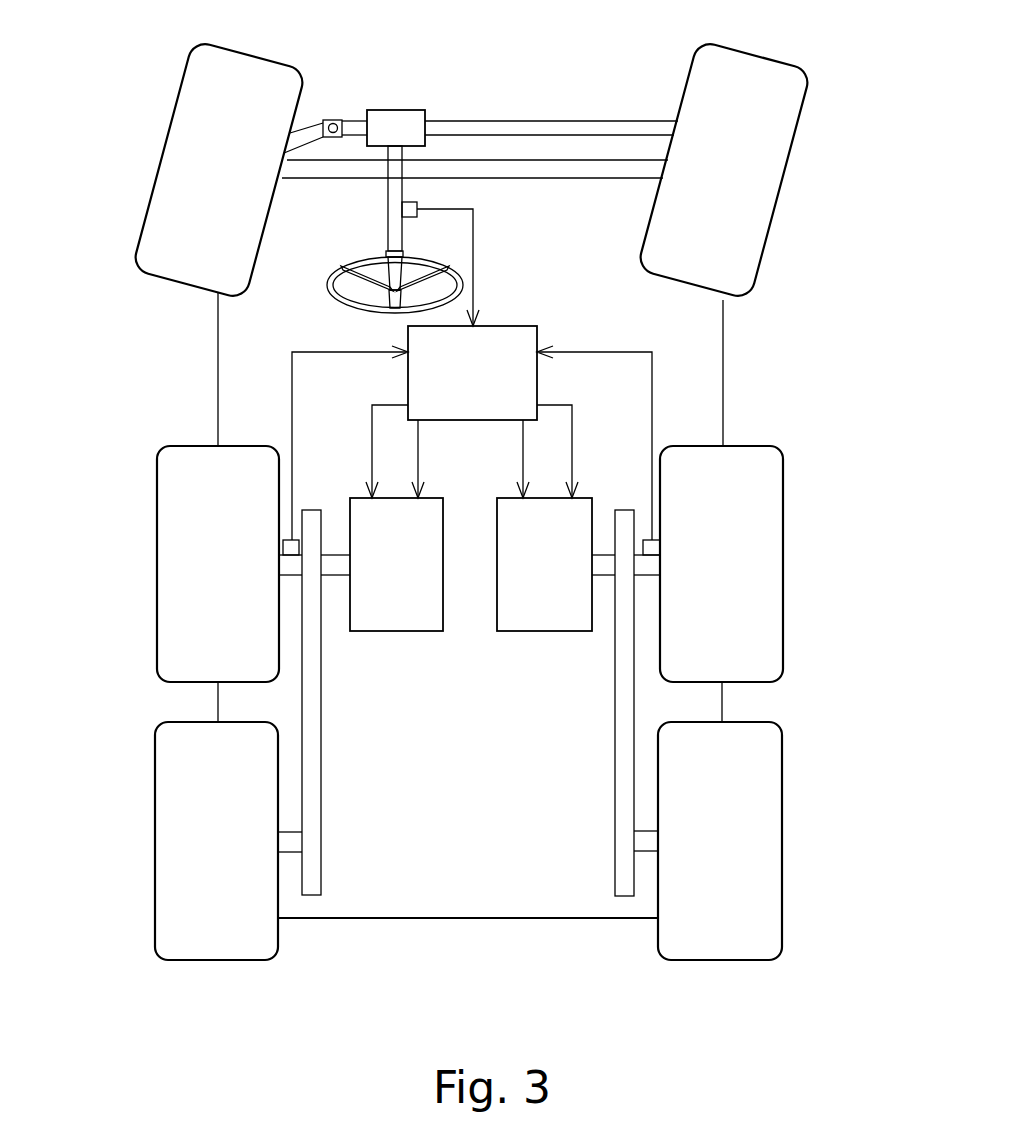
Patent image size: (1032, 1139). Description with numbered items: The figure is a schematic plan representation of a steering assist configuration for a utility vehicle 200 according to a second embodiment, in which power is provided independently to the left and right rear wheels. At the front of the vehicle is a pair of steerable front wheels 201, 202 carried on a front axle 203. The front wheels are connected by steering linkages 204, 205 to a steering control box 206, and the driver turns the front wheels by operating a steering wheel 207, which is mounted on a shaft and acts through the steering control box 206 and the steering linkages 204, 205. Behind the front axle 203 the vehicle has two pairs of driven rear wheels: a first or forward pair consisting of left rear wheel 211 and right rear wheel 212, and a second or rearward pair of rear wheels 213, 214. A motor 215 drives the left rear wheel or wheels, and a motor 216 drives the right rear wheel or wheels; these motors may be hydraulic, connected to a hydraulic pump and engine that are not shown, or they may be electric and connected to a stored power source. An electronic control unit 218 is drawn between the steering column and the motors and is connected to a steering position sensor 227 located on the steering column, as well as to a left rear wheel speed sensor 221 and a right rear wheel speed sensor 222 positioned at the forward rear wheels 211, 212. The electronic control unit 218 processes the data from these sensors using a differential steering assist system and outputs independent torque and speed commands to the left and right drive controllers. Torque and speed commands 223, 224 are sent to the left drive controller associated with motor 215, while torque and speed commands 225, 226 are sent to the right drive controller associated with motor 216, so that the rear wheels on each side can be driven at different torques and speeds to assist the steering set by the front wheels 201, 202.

The utility vehicle 200 is at (725, 349).
The steerable front wheel 201 is at (180, 83).
The steerable front wheel 202 is at (797, 145).
The front axle 203 is at (548, 158).
The steering linkage 204 is at (350, 118).
The steering linkage 205 is at (497, 121).
The steering control box 206 is at (412, 110).
The steering wheel 207 is at (337, 272).
The left rear wheel 211 is at (157, 605).
The right rear wheel 212 is at (783, 527).
The rear wheel 213 is at (155, 824).
The rear wheel 214 is at (782, 790).
The motor 215 is at (393, 631).
The motor 216 is at (543, 632).
The electronic control unit 218 is at (513, 327).
The left rear wheel speed sensor 221 is at (283, 548).
The right rear wheel speed sensor 222 is at (660, 548).
The torque command 223 is at (372, 448).
The speed command 224 is at (419, 444).
The torque command 225 is at (572, 443).
The speed command 226 is at (523, 452).
The steering position sensor 227 is at (420, 198).